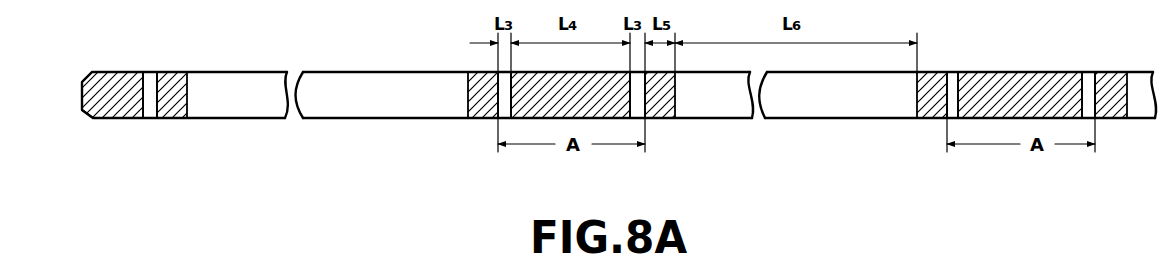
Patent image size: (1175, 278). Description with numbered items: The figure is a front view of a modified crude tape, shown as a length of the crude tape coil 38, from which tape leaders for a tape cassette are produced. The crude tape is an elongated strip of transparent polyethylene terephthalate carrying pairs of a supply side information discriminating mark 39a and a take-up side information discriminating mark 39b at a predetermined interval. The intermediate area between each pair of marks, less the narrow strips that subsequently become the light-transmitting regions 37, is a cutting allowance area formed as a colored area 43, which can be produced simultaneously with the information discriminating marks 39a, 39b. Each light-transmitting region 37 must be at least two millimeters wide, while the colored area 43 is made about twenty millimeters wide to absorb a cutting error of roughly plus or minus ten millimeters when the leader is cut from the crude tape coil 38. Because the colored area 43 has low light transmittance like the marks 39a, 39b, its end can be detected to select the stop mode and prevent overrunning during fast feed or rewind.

The crude tape coil 38 is at (113, 71).
The light-transmitting region 37 is at (150, 115).
The supply side information discriminating mark 39a is at (477, 112).
The take-up side information discriminating mark 39b is at (178, 112).
The colored area 43 is at (110, 115).